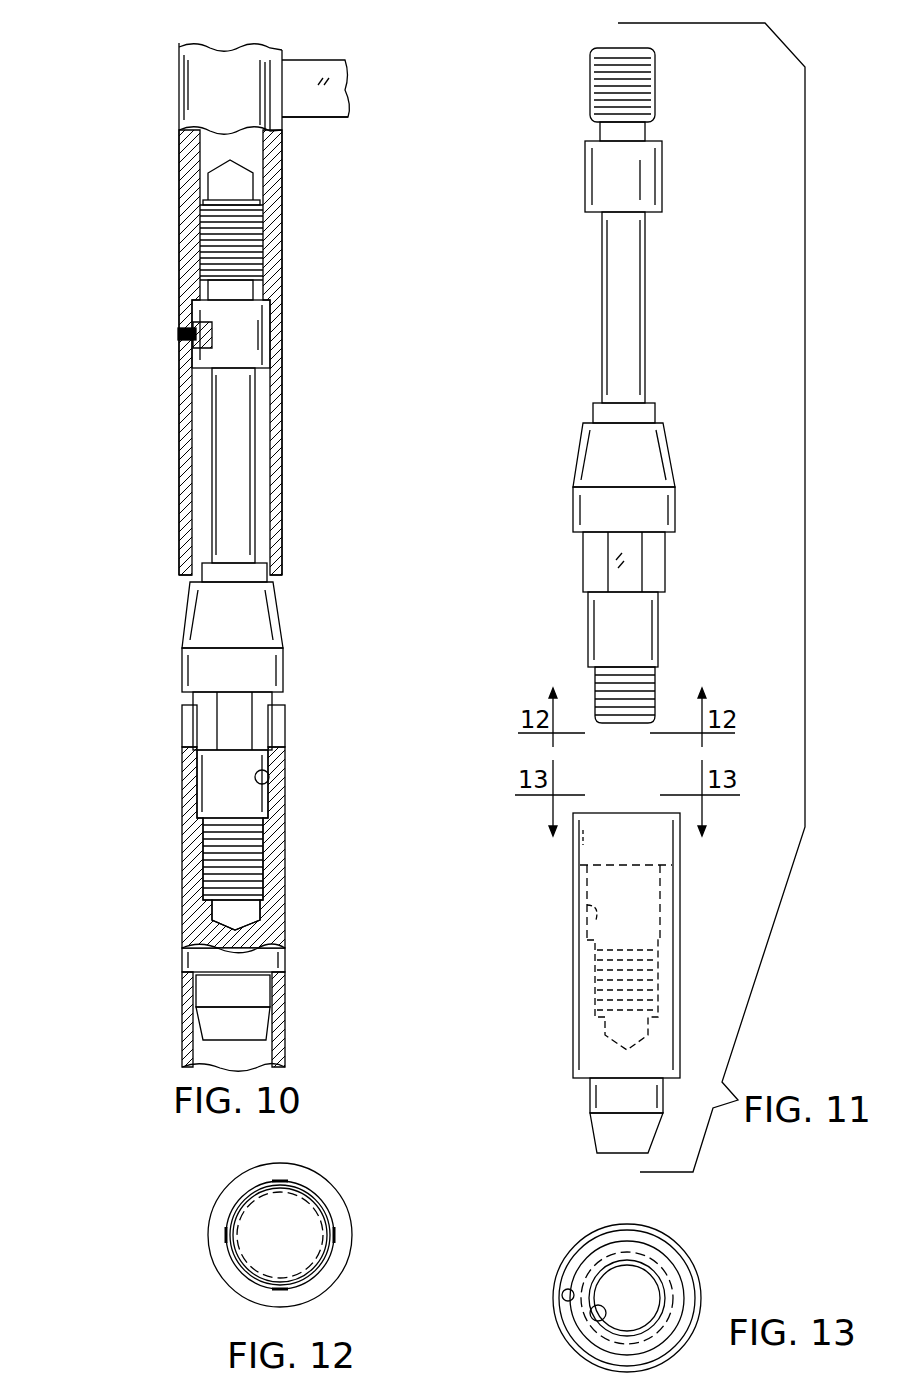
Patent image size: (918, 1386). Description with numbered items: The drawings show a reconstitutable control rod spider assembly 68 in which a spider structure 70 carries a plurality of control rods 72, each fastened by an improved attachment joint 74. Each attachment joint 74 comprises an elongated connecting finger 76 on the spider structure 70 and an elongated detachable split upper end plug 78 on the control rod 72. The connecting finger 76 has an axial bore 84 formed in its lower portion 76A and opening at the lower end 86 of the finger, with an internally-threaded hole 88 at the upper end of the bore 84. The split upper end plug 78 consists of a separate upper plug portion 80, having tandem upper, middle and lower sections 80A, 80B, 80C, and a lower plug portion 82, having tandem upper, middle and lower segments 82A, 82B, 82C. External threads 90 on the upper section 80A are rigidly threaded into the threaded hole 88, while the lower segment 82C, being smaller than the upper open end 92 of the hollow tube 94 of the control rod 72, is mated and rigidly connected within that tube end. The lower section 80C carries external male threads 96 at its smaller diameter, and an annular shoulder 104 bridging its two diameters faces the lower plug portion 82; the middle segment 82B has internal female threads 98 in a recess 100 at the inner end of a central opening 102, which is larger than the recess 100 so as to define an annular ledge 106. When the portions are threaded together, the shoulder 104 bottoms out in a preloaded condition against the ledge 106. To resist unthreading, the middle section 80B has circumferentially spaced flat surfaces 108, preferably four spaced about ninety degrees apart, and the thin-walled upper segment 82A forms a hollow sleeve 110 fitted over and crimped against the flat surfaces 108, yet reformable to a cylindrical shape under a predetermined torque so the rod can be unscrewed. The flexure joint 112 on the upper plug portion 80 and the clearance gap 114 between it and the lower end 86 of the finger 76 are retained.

In FIG. 10, the reconstitutable control rod spider assembly 68 is at (306, 44).
In FIG. 10, the spider structure 70 is at (327, 120).
In FIG. 10, the control rod 72 is at (180, 1043).
In FIG. 10, the attachment joint 74 is at (313, 328).
In FIG. 10, the connecting finger 76 is at (153, 110).
In FIG. 10, the lower portion of connecting finger 76A is at (180, 520).
In FIG. 10, the split upper end plug 78 is at (294, 626).
In FIG. 11, the split upper end plug 78 is at (738, 1100).
In FIG. 10, the upper plug portion 80 is at (282, 592).
In FIG. 11, the upper plug portion 80 is at (686, 437).
In FIG. 12, the upper plug portion 80 is at (212, 1173).
In FIG. 10, the upper section of upper plug portion 80A is at (230, 306).
In FIG. 11, the upper section of upper plug portion 80A is at (663, 175).
In FIG. 10, the middle section of upper plug portion 80B is at (182, 668).
In FIG. 11, the middle section of upper plug portion 80B is at (677, 506).
In FIG. 12, the middle section of upper plug portion 80B is at (345, 1192).
In FIG. 10, the lower section of upper plug portion 80C is at (215, 875).
In FIG. 11, the lower section of upper plug portion 80C is at (660, 626).
In FIG. 12, the lower section of upper plug portion 80C is at (318, 1278).
In FIG. 10, the lower plug portion 82 is at (291, 939).
In FIG. 11, the lower plug portion 82 is at (566, 994).
In FIG. 13, the lower plug portion 82 is at (701, 1244).
In FIG. 10, the upper segment of lower plug portion 82A is at (183, 740).
In FIG. 11, the upper segment of lower plug portion 82A is at (680, 848).
In FIG. 13, the upper segment of lower plug portion 82A is at (582, 1237).
In FIG. 10, the middle segment of lower plug portion 82B is at (275, 878).
In FIG. 11, the middle segment of lower plug portion 82B is at (575, 1055).
In FIG. 10, the lower segment of lower plug portion 82C is at (213, 990).
In FIG. 11, the lower segment of lower plug portion 82C is at (590, 1098).
In FIG. 10, the axial bore 84 is at (183, 466).
In FIG. 10, the lower end of connecting finger 86 is at (180, 563).
In FIG. 10, the internally-threaded hole 88 is at (250, 252).
In FIG. 10, the external threads 90 is at (205, 222).
In FIG. 11, the external threads 90 is at (657, 72).
In FIG. 10, the upper open end of control rod tube 92 is at (283, 998).
In FIG. 10, the hollow tube of control rod 94 is at (278, 1050).
In FIG. 10, the external male threads 96 is at (200, 912).
In FIG. 11, the external male threads 96 is at (597, 692).
In FIG. 12, the external male threads 96 is at (332, 1243).
In FIG. 10, the internal female threads 98 is at (262, 920).
In FIG. 11, the internal female threads 98 is at (597, 970).
In FIG. 10, the recess 100 is at (210, 938).
In FIG. 11, the recess 100 is at (597, 1042).
In FIG. 13, the recess 100 is at (598, 1321).
In FIG. 10, the central opening 102 is at (266, 777).
In FIG. 11, the central opening 102 is at (578, 912).
In FIG. 13, the central opening 102 is at (568, 1302).
In FIG. 10, the annular shoulder 104 is at (215, 838).
In FIG. 11, the annular shoulder 104 is at (660, 682).
In FIG. 10, the annular ledge 106 is at (272, 812).
In FIG. 11, the annular ledge 106 is at (683, 918).
In FIG. 10, the flat surfaces 108 is at (222, 722).
In FIG. 11, the flat surfaces 108 is at (630, 572).
In FIG. 12, the flat surfaces 108 is at (282, 1180).
In FIG. 10, the hollow sleeve 110 is at (282, 718).
In FIG. 11, the hollow sleeve 110 is at (575, 850).
In FIG. 13, the hollow sleeve 110 is at (561, 1266).
In FIG. 10, the flexure joint 112 is at (255, 447).
In FIG. 11, the flexure joint 112 is at (647, 303).
In FIG. 10, the clearance gap 114 is at (190, 581).